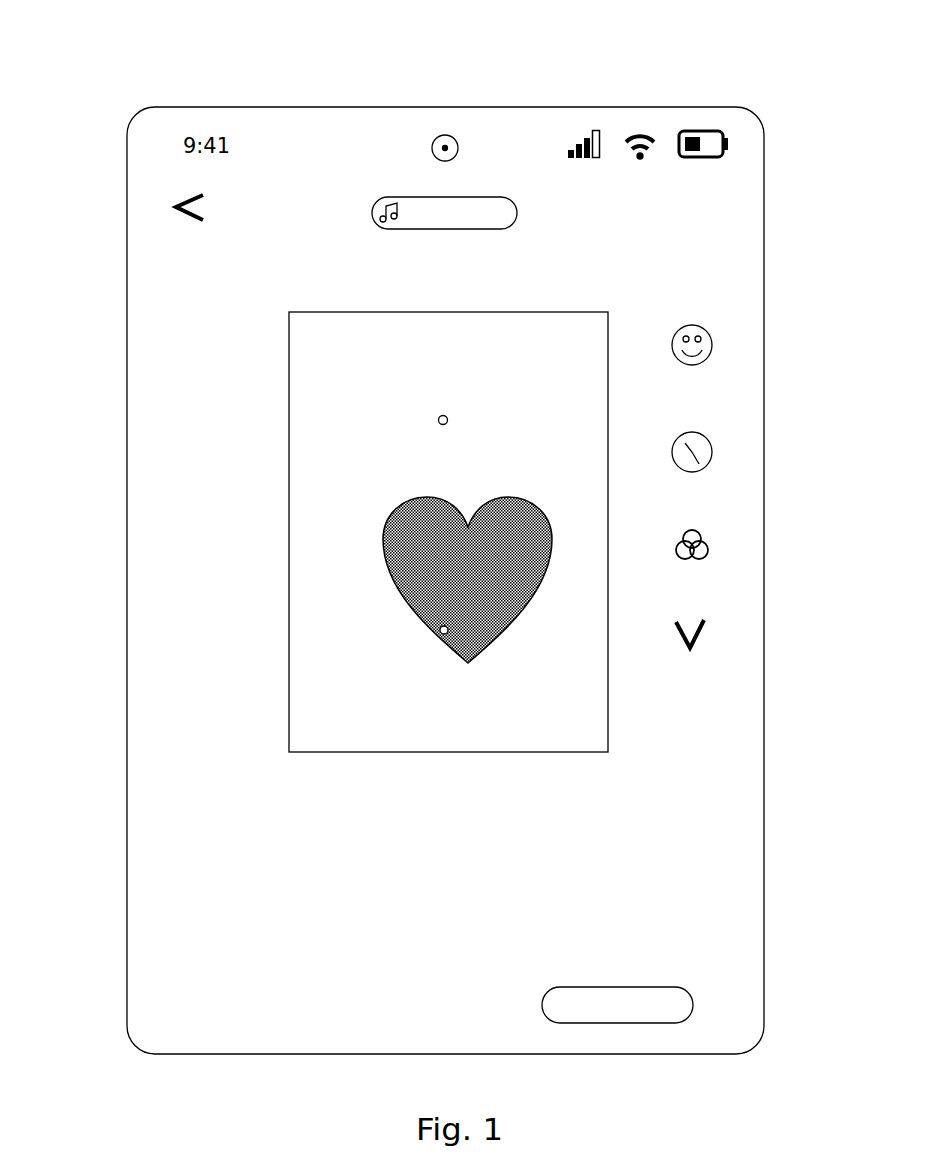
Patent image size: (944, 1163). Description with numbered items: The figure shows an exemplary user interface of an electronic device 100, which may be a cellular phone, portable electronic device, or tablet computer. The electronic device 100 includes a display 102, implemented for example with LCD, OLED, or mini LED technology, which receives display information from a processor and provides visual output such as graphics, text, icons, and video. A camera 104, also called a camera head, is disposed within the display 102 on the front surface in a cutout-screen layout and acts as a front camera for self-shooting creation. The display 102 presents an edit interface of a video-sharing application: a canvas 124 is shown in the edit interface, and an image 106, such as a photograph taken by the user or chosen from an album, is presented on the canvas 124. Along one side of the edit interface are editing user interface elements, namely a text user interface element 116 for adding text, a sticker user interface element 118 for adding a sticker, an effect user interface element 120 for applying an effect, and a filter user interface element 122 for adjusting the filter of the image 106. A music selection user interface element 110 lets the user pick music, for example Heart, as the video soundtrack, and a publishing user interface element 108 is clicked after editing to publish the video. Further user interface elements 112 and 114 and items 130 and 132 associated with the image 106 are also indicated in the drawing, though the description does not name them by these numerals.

The electronic device 100 is at (133, 64).
The display 102 is at (764, 636).
The camera 104 is at (450, 134).
The image 106 is at (512, 312).
The publishing user interface element 108 is at (638, 987).
The music selection user interface element 110 is at (513, 220).
The back button 112 is at (200, 213).
The expand/more tools button 114 is at (700, 626).
The text user interface element 116 is at (703, 244).
The sticker user interface element 118 is at (711, 338).
The effect user interface element 120 is at (706, 436).
The filter user interface element 122 is at (701, 538).
The canvas 124 is at (157, 583).
The media content item (heart graphic) 130 is at (447, 417).
The edit handle on media content item 132 is at (440, 630).